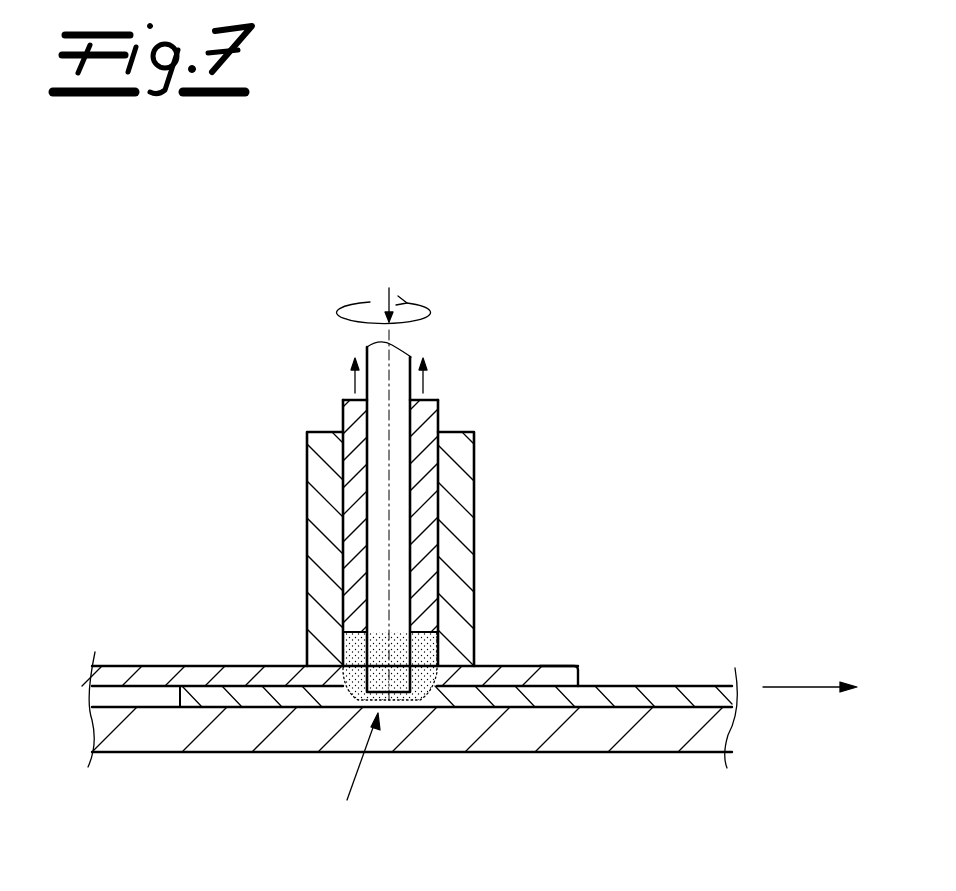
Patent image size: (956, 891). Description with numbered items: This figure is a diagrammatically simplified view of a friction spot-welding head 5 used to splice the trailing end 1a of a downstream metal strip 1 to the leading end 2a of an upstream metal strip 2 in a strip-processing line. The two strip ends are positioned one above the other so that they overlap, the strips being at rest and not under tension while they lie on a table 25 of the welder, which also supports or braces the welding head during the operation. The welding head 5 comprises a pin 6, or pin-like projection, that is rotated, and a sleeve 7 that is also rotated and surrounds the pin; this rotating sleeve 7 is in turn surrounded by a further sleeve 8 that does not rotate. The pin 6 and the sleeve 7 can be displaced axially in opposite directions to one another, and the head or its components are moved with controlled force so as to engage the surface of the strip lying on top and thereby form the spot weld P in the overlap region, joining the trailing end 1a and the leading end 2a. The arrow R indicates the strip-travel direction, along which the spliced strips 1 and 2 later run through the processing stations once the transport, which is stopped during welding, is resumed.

The downstream metal strip 1 is at (417, 713).
The trailing end 1a is at (248, 698).
The upstream metal strip 2 is at (407, 625).
The leading end 2a is at (542, 670).
The friction spot-welding head 5 is at (401, 498).
The pin 6 is at (402, 577).
The sleeve 7 is at (427, 490).
The non-rotating sleeve 8 is at (323, 493).
The table 25 is at (565, 740).
The spot weld P is at (356, 779).
The strip-travel direction R is at (803, 687).